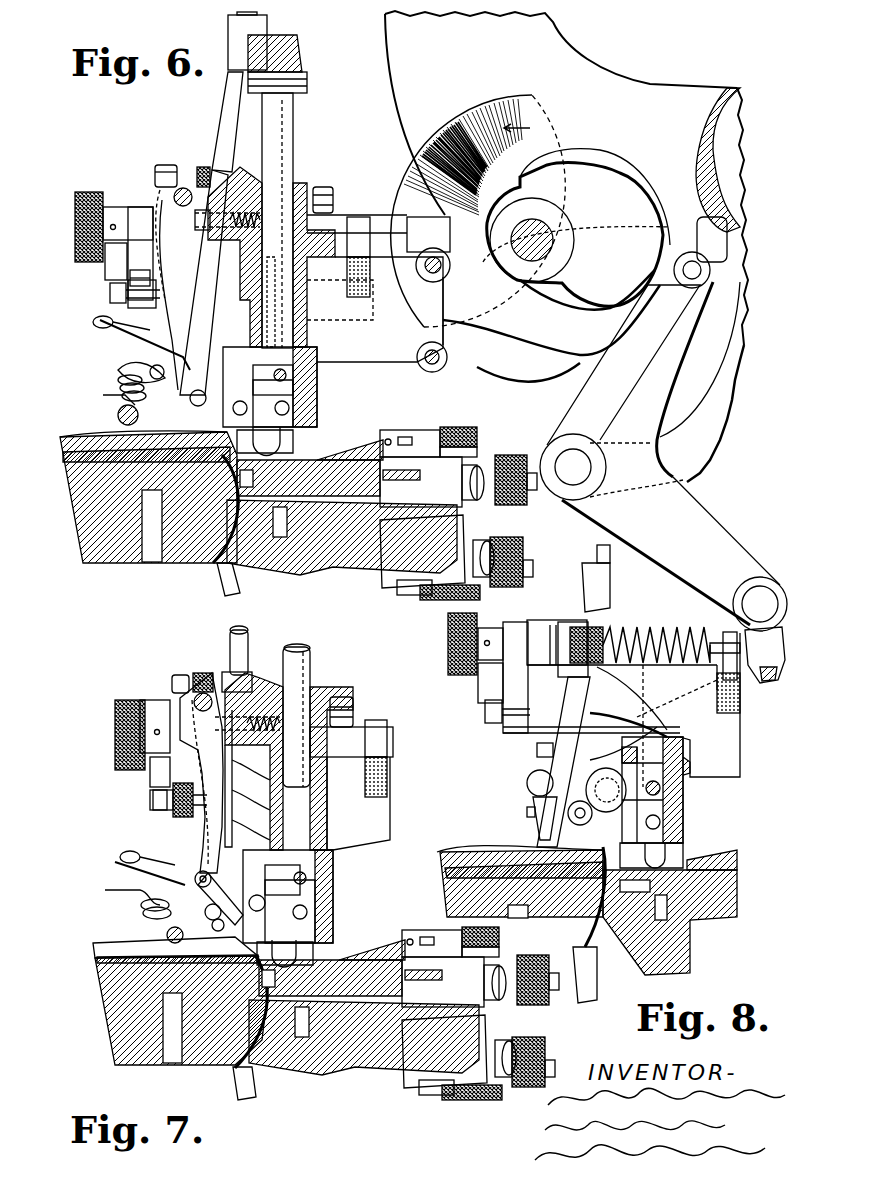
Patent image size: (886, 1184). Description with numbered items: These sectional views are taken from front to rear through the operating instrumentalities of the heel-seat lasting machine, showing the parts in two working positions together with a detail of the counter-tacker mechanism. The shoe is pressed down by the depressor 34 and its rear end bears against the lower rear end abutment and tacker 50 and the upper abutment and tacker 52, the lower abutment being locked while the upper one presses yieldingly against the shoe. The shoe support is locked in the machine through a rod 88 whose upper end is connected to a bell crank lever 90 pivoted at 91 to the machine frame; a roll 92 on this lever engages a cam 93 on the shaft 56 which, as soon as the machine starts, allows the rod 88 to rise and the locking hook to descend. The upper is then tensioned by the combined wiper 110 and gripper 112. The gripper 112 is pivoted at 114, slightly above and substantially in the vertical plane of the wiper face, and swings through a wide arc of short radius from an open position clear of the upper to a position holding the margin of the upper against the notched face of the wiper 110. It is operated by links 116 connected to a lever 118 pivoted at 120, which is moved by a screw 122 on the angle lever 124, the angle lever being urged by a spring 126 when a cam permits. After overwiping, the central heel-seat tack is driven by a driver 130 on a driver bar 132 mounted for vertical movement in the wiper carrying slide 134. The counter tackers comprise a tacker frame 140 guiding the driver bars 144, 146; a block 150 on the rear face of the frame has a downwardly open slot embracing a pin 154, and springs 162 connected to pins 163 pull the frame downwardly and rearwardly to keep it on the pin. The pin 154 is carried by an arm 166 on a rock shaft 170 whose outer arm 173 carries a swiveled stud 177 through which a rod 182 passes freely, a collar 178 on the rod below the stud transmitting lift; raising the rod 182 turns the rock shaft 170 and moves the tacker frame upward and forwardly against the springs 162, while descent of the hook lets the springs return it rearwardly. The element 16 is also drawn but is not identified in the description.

In FIG. 6, the base block 16 is at (152, 540).
In FIG. 7, the base block 16 is at (175, 1045).
In FIG. 6, the depressor 34 is at (63, 455).
In FIG. 7, the depressor 34 is at (93, 950).
In FIG. 8, the depressor 34 is at (475, 850).
In FIG. 6, the lower rear end abutment and tacker 50 is at (320, 570).
In FIG. 7, the lower rear end abutment and tacker 50 is at (335, 1072).
In FIG. 8, the lower rear end abutment and tacker 50 is at (695, 930).
In FIG. 6, the upper abutment and tacker 52 is at (358, 450).
In FIG. 7, the upper abutment and tacker 52 is at (378, 950).
In FIG. 8, the upper abutment and tacker 52 is at (732, 855).
In FIG. 6, the shaft 56 is at (545, 233).
In FIG. 8, the rod 88 is at (766, 675).
In FIG. 6, the bell crank lever 90 is at (713, 512).
In FIG. 6, the pivot 91 is at (575, 465).
In FIG. 6, the roll 92 is at (712, 258).
In FIG. 6, the cam 93 is at (650, 188).
In FIG. 6, the wiper 110 is at (262, 430).
In FIG. 7, the wiper 110 is at (300, 940).
In FIG. 8, the wiper 110 is at (680, 860).
In FIG. 6, the gripper 112 is at (118, 415).
In FIG. 7, the gripper 112 is at (160, 932).
In FIG. 6, the pivot 114 is at (300, 395).
In FIG. 7, the pivot 114 is at (292, 905).
In FIG. 6, the links 116 is at (140, 385).
In FIG. 7, the links 116 is at (165, 915).
In FIG. 6, the lever 118 is at (140, 345).
In FIG. 7, the lever 118 is at (130, 873).
In FIG. 6, the pivot 120 is at (185, 188).
In FIG. 6, the screw 122 is at (110, 285).
In FIG. 7, the screw 122 is at (170, 815).
In FIG. 6, the angle lever 124 is at (145, 215).
In FIG. 7, the angle lever 124 is at (178, 762).
In FIG. 8, the angle lever 124 is at (490, 690).
In FIG. 6, the spring 126 is at (420, 166).
In FIG. 8, the spring 126 is at (660, 640).
In FIG. 6, the driver 130 is at (292, 290).
In FIG. 6, the driver bar 132 is at (275, 150).
In FIG. 7, the driver bar 132 is at (300, 680).
In FIG. 6, the wiper carrying slide 134 is at (305, 330).
In FIG. 6, the tacker frame 140 is at (217, 168).
In FIG. 7, the tacker frame 140 is at (205, 860).
In FIG. 8, the tacker frame 140 is at (593, 592).
In FIG. 6, the driver bar 144 is at (230, 125).
In FIG. 7, the driver bar 144 is at (245, 650).
In FIG. 6, the driver bar 146 is at (300, 62).
In FIG. 6, the block 150 is at (140, 366).
In FIG. 8, the block 150 is at (537, 750).
In FIG. 8, the pin 154 is at (585, 822).
In FIG. 6, the springs 162 is at (125, 395).
In FIG. 7, the springs 162 is at (140, 893).
In FIG. 6, the pins 163 is at (93, 322).
In FIG. 7, the pins 163 is at (120, 855).
In FIG. 8, the arm 166 is at (665, 800).
In FIG. 6, the rock shaft 170 is at (318, 362).
In FIG. 7, the rock shaft 170 is at (292, 865).
In FIG. 8, the rock shaft 170 is at (680, 760).
In FIG. 8, the arm 173 is at (645, 742).
In FIG. 7, the stud 177 is at (206, 915).
In FIG. 8, the stud 177 is at (527, 782).
In FIG. 8, the collar 178 is at (533, 805).
In FIG. 6, the rod 182 is at (215, 567).
In FIG. 7, the rod 182 is at (258, 1085).
In FIG. 8, the rod 182 is at (590, 995).